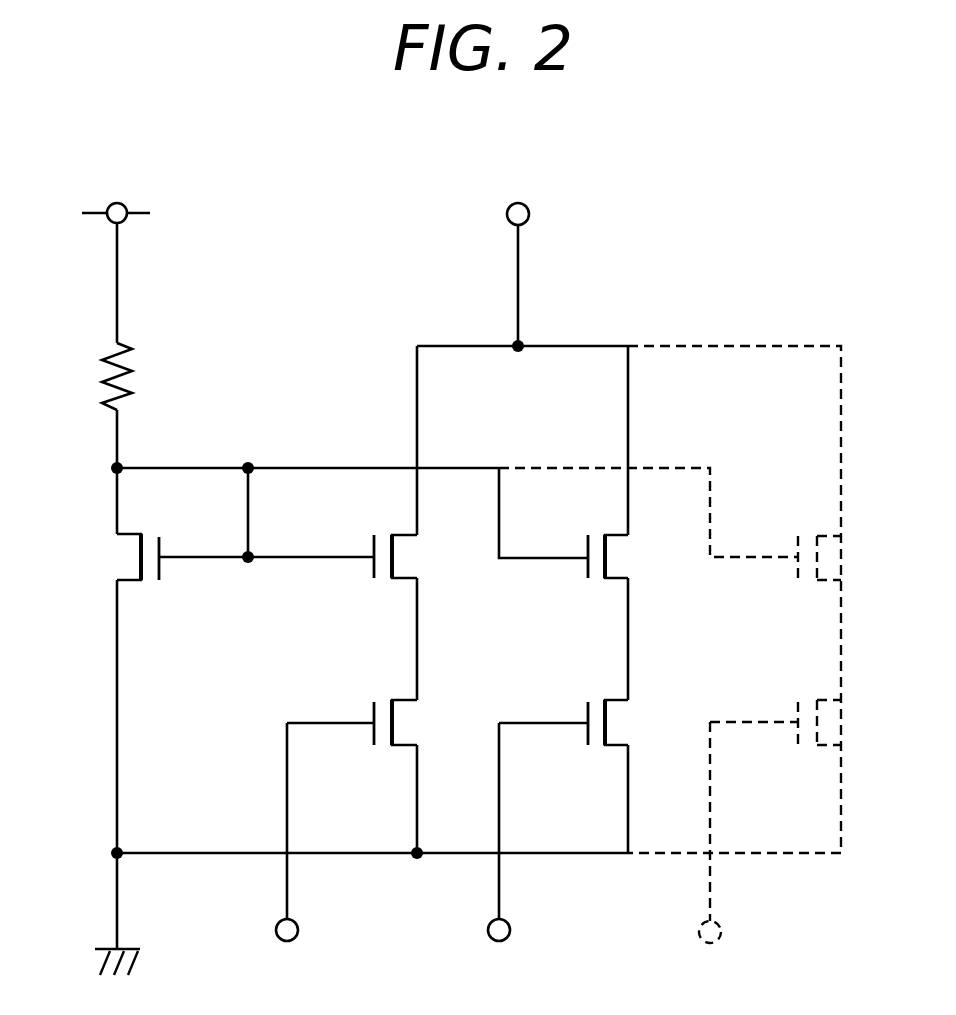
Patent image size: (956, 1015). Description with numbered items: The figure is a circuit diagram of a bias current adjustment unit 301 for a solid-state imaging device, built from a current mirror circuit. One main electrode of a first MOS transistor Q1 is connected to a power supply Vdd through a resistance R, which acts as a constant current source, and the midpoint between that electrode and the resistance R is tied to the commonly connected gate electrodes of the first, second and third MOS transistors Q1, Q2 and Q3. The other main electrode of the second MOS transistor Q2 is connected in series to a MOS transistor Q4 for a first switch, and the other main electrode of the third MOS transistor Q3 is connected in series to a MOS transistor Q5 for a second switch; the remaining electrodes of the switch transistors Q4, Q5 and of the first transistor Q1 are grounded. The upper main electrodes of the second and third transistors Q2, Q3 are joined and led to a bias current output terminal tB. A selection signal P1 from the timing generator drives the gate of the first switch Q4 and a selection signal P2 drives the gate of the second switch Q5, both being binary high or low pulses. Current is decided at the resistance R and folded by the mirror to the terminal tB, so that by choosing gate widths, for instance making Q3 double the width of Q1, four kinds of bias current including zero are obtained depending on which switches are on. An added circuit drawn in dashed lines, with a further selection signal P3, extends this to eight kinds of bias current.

The first MOS transistor Q1 is at (141, 557).
The second MOS transistor Q2 is at (392, 557).
The third MOS transistor Q3 is at (605, 557).
The MOS transistor for first switch Q4 is at (392, 723).
The MOS transistor for second switch Q5 is at (605, 723).
The resistance R is at (101, 376).
The bias current adjustment unit 301 is at (715, 323).
The power supply Vdd is at (116, 254).
The bias current output terminal tB is at (517, 195).
The selection signal P1 is at (287, 951).
The selection signal P2 is at (500, 951).
The terminal P3 is at (710, 952).